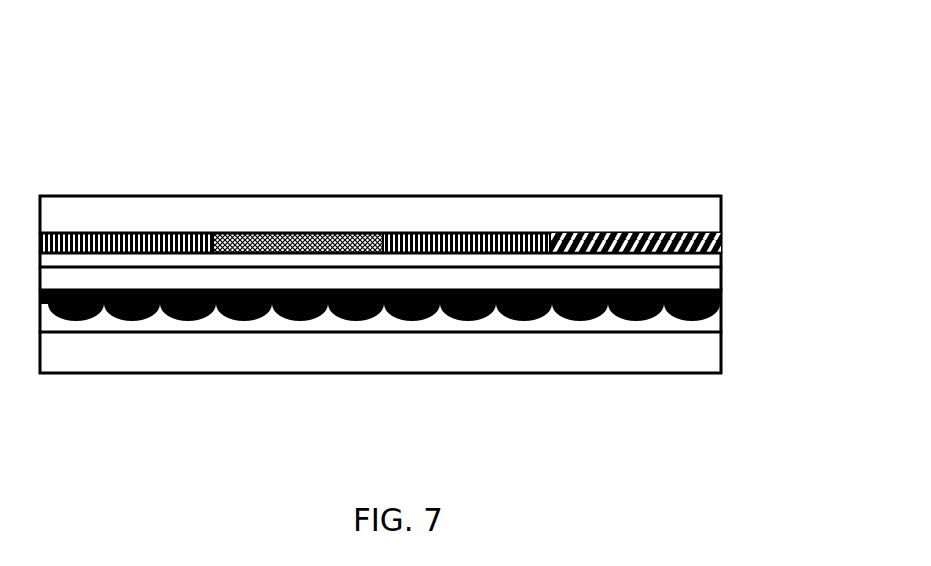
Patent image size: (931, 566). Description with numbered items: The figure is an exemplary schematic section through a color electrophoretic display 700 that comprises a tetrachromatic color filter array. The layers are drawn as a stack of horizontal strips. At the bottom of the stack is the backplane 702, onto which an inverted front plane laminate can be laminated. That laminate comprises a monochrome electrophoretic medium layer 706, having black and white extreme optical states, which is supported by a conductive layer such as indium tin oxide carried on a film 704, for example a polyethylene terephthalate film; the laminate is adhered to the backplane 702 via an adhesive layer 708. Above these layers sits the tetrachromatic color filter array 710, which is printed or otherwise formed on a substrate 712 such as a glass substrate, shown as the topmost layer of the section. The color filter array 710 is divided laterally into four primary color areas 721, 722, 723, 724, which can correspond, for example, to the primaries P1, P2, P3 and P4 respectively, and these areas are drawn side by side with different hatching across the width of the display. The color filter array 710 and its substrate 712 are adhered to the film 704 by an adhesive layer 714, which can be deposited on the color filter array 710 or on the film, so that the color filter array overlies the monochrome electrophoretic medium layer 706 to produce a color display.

The color electrophoretic display 700 is at (49, 77).
The backplane 702 is at (710, 357).
The film 704 is at (710, 280).
The monochrome electrophoretic medium layer 706 is at (718, 303).
The adhesive layer 708 is at (710, 323).
The tetrachromatic color filter array 710 is at (427, 190).
The substrate 712 is at (705, 215).
The adhesive layer 714 is at (710, 261).
The primary color area 721 is at (605, 234).
The primary color area 722 is at (463, 234).
The primary color area 723 is at (310, 245).
The primary color area 724 is at (142, 236).